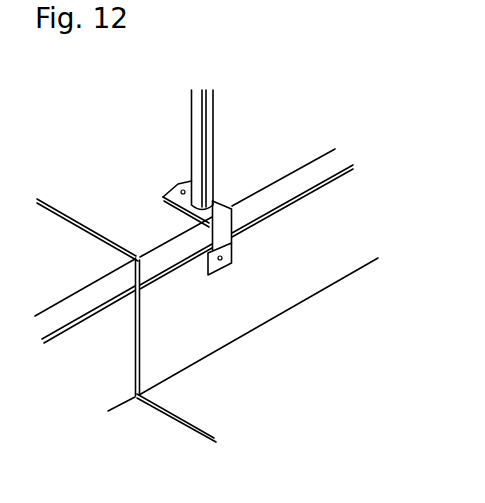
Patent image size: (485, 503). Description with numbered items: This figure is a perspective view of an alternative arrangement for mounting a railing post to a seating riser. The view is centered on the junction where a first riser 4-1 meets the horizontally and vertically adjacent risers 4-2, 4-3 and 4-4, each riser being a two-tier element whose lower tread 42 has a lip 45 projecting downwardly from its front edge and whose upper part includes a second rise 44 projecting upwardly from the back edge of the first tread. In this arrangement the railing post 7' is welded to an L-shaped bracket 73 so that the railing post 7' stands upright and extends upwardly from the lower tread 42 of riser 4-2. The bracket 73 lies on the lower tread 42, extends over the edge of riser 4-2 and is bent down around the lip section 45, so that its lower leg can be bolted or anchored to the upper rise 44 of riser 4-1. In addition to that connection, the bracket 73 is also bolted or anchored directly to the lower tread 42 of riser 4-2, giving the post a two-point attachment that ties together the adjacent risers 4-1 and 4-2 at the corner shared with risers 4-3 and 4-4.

The railing post 7' is at (172, 150).
The lower tread 42 is at (246, 189).
The L-shaped bracket 73 is at (163, 196).
The lip 45 is at (307, 183).
The second rise 44 is at (268, 270).
The first riser 4-1 is at (218, 405).
The riser 4-2 is at (165, 232).
The riser 4-3 is at (83, 274).
The riser 4-4 is at (110, 376).